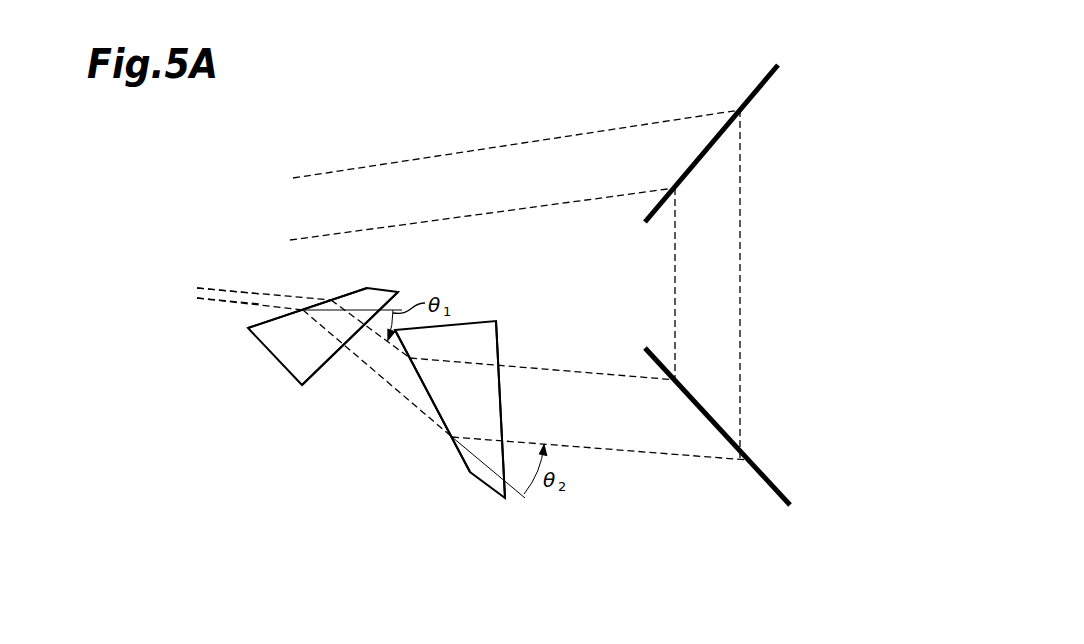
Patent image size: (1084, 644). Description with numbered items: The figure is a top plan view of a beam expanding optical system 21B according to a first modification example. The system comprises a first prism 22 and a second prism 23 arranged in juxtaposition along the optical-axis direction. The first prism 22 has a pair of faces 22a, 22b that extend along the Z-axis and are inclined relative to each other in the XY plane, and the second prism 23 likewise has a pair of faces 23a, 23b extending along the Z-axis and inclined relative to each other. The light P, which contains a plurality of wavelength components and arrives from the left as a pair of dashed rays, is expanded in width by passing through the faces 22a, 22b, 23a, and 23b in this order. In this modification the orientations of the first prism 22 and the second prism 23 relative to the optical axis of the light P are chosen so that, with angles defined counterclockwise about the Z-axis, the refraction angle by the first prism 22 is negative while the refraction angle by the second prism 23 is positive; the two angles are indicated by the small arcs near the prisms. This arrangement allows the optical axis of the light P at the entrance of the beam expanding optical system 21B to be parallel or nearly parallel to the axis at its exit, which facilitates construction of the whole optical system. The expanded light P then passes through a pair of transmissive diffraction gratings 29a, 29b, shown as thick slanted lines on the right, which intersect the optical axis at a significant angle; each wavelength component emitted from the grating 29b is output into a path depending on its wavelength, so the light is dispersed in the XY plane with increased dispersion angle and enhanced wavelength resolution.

The beam expanding optical system 21B is at (403, 552).
The first prism 22 is at (287, 374).
The face of first prism 22a is at (342, 291).
The face of first prism 22b is at (323, 365).
The second prism 23 is at (468, 467).
The face of second prism 23a is at (457, 452).
The face of second prism 23b is at (497, 345).
The transmissive diffraction grating 29a is at (772, 485).
The transmissive diffraction grating 29b is at (758, 92).
The light P is at (213, 300).